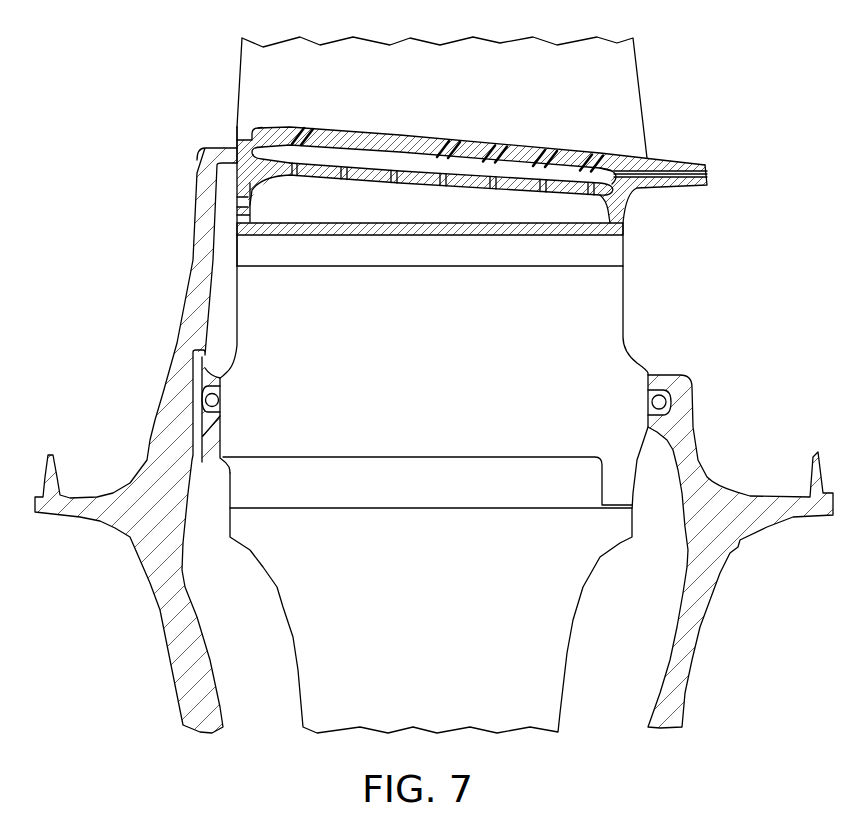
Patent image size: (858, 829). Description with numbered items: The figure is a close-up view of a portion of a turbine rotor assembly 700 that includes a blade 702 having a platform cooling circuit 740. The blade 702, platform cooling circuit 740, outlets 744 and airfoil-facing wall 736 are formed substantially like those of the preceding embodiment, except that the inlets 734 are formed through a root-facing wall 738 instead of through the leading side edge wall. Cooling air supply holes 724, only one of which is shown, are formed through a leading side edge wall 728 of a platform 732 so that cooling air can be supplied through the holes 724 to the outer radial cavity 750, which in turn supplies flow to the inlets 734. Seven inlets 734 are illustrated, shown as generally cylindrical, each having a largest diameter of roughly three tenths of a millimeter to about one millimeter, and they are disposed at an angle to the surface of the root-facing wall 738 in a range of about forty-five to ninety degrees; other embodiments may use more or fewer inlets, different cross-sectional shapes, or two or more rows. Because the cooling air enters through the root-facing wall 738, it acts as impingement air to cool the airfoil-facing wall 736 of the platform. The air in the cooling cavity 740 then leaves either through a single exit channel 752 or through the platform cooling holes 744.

The turbine rotor assembly 700 is at (750, 82).
The blade 702 is at (237, 313).
The cooling air supply holes 724 is at (237, 201).
The leading side edge wall 728 is at (236, 165).
The platform 732 is at (668, 163).
The inlets 734 is at (393, 183).
The airfoil-facing wall 736 is at (474, 146).
The root-facing wall 738 is at (512, 188).
The platform cooling circuit 740 is at (262, 152).
The outlets 744 is at (308, 127).
The outer radial cavity 750 is at (270, 211).
The exit channel 752 is at (707, 174).